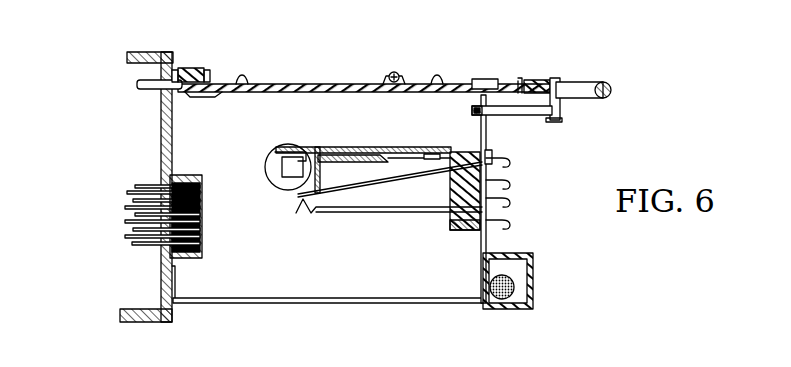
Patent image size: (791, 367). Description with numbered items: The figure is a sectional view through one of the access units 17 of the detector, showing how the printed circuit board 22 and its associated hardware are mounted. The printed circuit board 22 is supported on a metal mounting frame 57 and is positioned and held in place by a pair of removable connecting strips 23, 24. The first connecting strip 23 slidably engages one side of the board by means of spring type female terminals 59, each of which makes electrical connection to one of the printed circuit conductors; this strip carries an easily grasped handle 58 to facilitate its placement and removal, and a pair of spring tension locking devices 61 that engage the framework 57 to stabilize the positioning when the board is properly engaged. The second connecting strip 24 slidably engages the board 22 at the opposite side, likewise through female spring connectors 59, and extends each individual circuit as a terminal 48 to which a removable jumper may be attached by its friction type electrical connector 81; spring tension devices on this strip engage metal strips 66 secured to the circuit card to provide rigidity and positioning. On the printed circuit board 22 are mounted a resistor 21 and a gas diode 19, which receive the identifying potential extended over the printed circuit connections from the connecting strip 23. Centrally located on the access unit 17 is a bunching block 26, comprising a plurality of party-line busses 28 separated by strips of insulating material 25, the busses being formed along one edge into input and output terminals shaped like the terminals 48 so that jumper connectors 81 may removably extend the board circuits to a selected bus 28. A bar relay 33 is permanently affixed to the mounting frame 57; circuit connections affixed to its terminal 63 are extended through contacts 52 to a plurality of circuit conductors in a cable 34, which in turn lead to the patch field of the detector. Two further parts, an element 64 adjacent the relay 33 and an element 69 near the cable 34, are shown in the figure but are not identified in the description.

The access unit 17 is at (46, 200).
The gas diode 19 is at (393, 71).
The resistor 21 is at (480, 78).
The printed circuit board 22 is at (322, 82).
The connecting strip 23 is at (537, 78).
The connecting strip 24 is at (197, 66).
The strips of insulating material 25 is at (131, 187).
The bunching block 26 is at (204, 226).
The party-line busses 28 is at (131, 243).
The bar relay 33 is at (270, 150).
The cable 34 is at (503, 306).
The terminal 48 is at (137, 84).
The contacts 52 is at (296, 200).
The mounting frame 57 is at (123, 308).
The handle 58 is at (600, 81).
The spring type female terminals 59 is at (527, 116).
The spring tension locking devices 61 is at (472, 110).
The terminal 63 is at (512, 221).
The arm 64 is at (272, 172).
The metal strips 66 is at (243, 74).
The housing 69 is at (533, 263).
The friction type electrical connector 81 is at (552, 117).